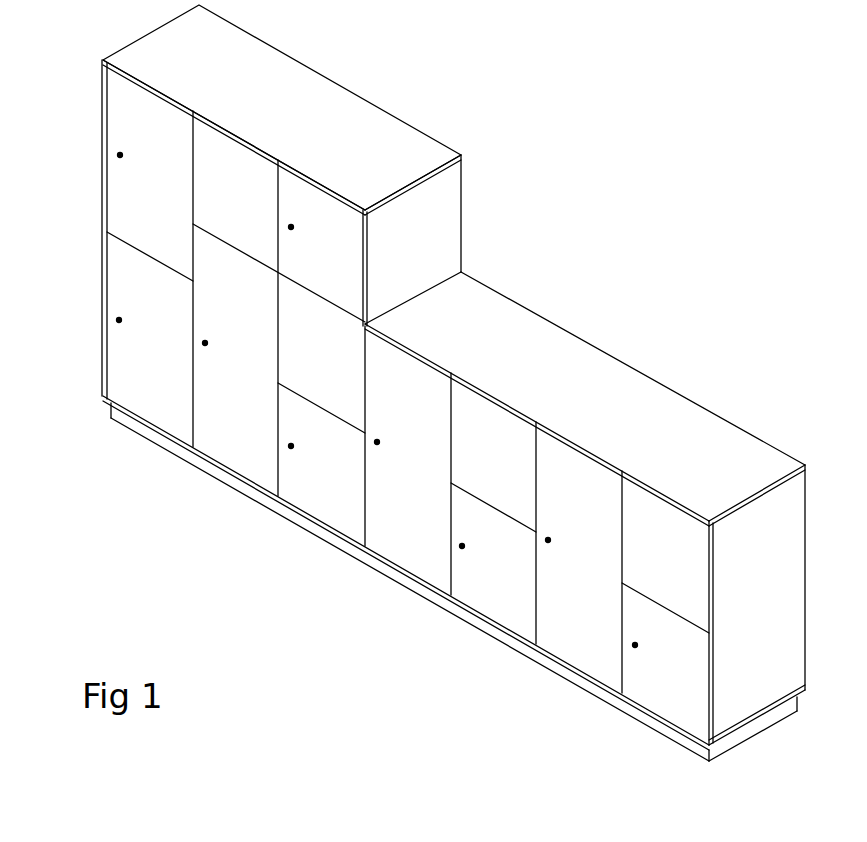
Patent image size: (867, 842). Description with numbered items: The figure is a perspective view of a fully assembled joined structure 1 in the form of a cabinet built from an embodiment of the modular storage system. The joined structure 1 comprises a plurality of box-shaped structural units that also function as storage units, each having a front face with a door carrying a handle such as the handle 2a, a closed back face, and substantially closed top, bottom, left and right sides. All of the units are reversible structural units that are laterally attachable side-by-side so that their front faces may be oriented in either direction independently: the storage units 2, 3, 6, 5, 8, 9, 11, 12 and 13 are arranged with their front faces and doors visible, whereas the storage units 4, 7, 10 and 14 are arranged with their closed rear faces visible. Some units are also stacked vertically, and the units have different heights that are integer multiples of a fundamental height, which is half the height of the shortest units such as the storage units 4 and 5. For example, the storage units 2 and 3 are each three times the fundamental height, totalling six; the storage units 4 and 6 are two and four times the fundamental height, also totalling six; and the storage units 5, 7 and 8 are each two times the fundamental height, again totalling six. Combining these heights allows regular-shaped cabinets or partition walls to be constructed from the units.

The joined structure 1 is at (566, 119).
The structural unit 2 is at (125, 137).
The handle 2a is at (116, 158).
The structural unit 3 is at (125, 286).
The structural unit 4 is at (230, 162).
The structural unit 5 is at (342, 217).
The structural unit 6 is at (233, 430).
The structural unit 7 is at (330, 350).
The structural unit 8 is at (324, 493).
The structural unit 9 is at (405, 547).
The structural unit 10 is at (488, 428).
The structural unit 11 is at (495, 593).
The structural unit 12 is at (582, 470).
The structural unit 13 is at (653, 677).
The structural unit 14 is at (667, 530).